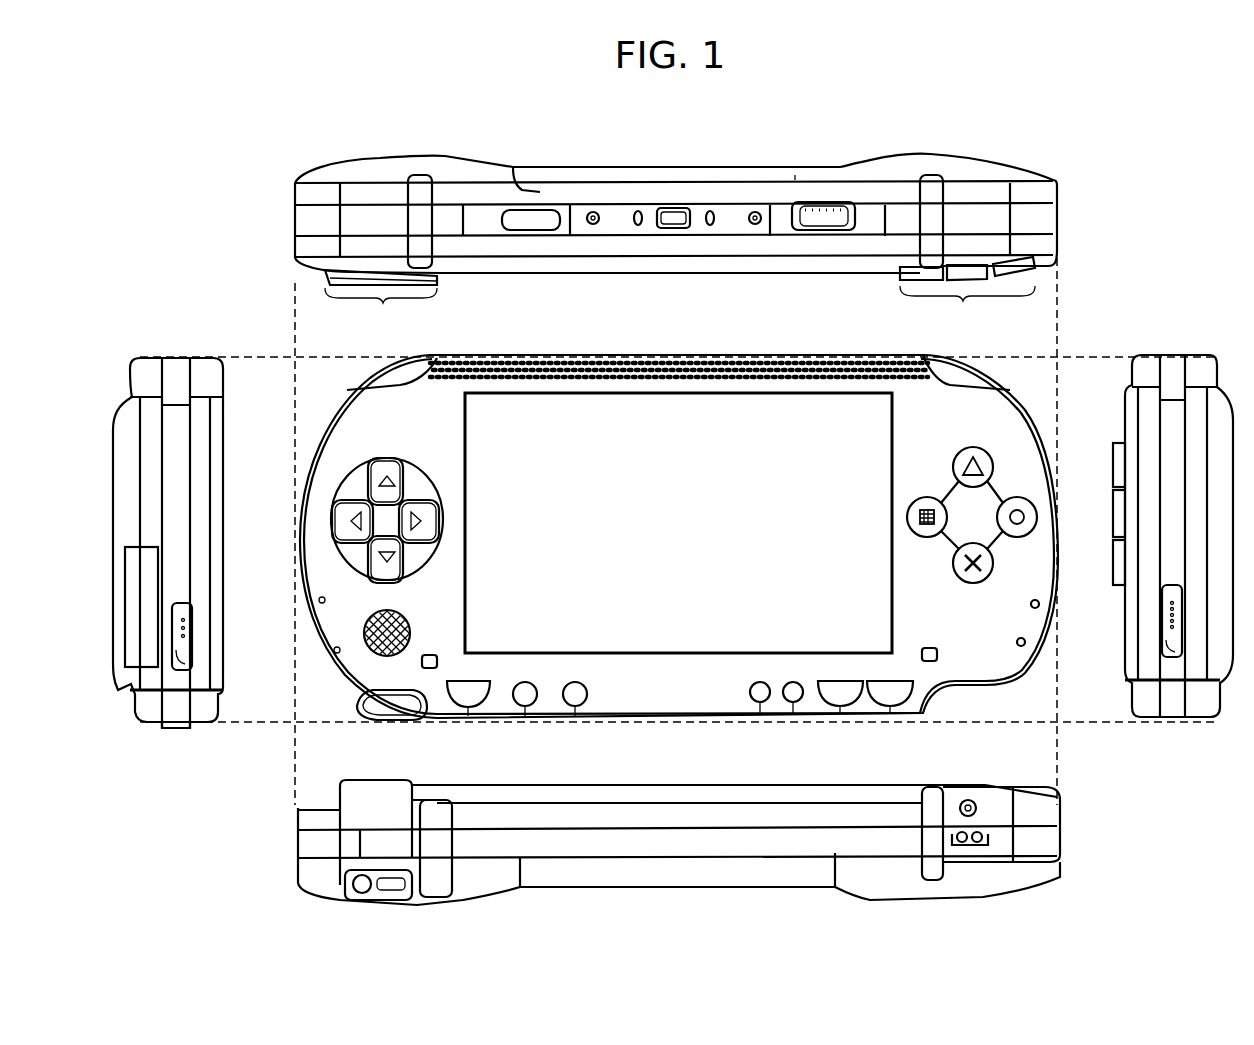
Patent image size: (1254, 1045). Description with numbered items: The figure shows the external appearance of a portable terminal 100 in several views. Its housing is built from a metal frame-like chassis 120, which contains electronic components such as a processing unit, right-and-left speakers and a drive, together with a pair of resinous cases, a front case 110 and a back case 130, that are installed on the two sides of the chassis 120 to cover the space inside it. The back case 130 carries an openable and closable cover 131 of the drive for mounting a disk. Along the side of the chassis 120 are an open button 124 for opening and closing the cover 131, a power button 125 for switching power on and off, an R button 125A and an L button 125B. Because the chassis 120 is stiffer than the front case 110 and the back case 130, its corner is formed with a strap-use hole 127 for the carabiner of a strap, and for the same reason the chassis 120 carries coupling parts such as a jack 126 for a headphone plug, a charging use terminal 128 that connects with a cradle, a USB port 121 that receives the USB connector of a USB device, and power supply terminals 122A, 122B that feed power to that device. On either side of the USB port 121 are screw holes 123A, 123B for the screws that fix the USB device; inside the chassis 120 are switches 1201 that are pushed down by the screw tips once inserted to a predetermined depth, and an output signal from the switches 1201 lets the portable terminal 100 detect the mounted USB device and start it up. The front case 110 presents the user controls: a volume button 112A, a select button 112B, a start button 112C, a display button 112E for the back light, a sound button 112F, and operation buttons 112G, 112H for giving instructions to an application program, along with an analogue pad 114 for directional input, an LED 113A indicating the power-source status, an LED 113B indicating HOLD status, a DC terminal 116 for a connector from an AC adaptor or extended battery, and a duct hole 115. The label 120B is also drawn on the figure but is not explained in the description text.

The portable terminal 100 is at (1115, 105).
The front case 110 is at (1080, 234).
The chassis 120 is at (1080, 201).
The back case 130 is at (1080, 168).
The volume button 112A is at (530, 718).
The select button 112B is at (838, 718).
The start button 112C is at (890, 718).
The display button 112E is at (472, 718).
The sound button 112F is at (790, 718).
The operation button 112G is at (340, 773).
The operation button 112H is at (1005, 455).
The LED 113A is at (1037, 608).
The LED 113B is at (1021, 646).
The analogue pad 114 is at (363, 618).
The duct hole 115 is at (430, 668).
The DC terminal 116 is at (972, 803).
The side portion of middle housing 120B is at (973, 686).
The USB port 121 is at (675, 208).
The power supply terminal 122A is at (638, 211).
The power supply terminal 122B is at (710, 211).
The screw hole 123A is at (593, 212).
The screw hole 123B is at (755, 212).
The open button 124 is at (822, 204).
The power button 125 is at (1177, 660).
The R button 125A is at (927, 356).
The L button 125B is at (427, 358).
The jack 126 is at (384, 900).
The strap-use hole 127 is at (357, 704).
The charging use terminal 128 is at (965, 848).
The cover 131 is at (795, 180).
The switches 1201 is at (593, 224).